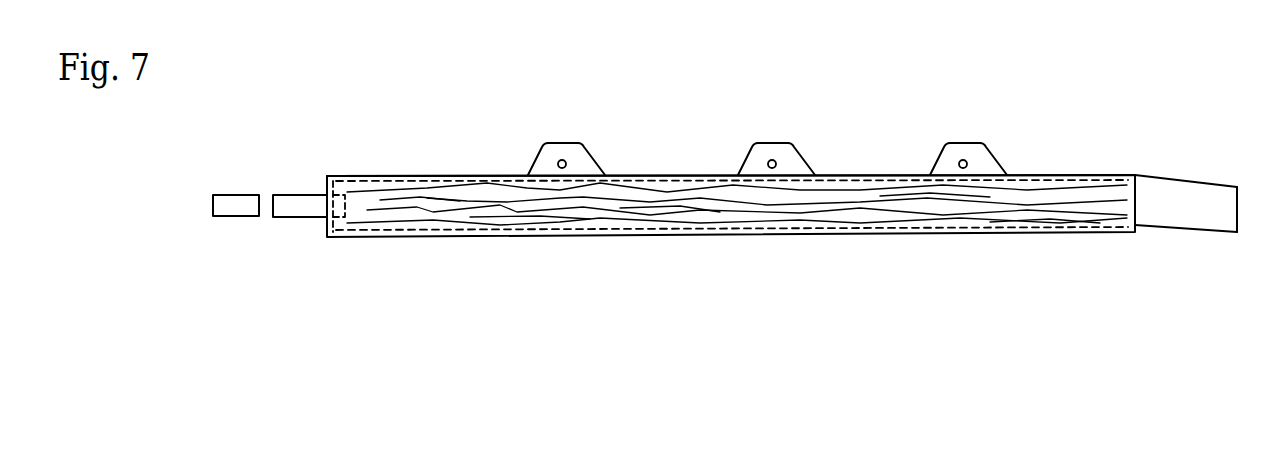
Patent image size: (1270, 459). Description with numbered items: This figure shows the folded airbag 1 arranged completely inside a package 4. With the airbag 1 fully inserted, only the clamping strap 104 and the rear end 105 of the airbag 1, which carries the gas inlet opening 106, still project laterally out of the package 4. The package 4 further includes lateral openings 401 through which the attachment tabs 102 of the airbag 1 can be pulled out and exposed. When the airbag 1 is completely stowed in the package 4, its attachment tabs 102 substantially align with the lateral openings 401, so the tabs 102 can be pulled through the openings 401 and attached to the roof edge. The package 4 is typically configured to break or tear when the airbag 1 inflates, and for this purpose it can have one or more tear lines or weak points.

The airbag 1 is at (702, 208).
The package 4 is at (467, 237).
The lateral openings 401 is at (528, 173).
The attachment tabs 102 is at (575, 150).
The clamping strap 104 is at (237, 207).
The rear end 105 is at (1173, 215).
The gas inlet opening 106 is at (1238, 212).